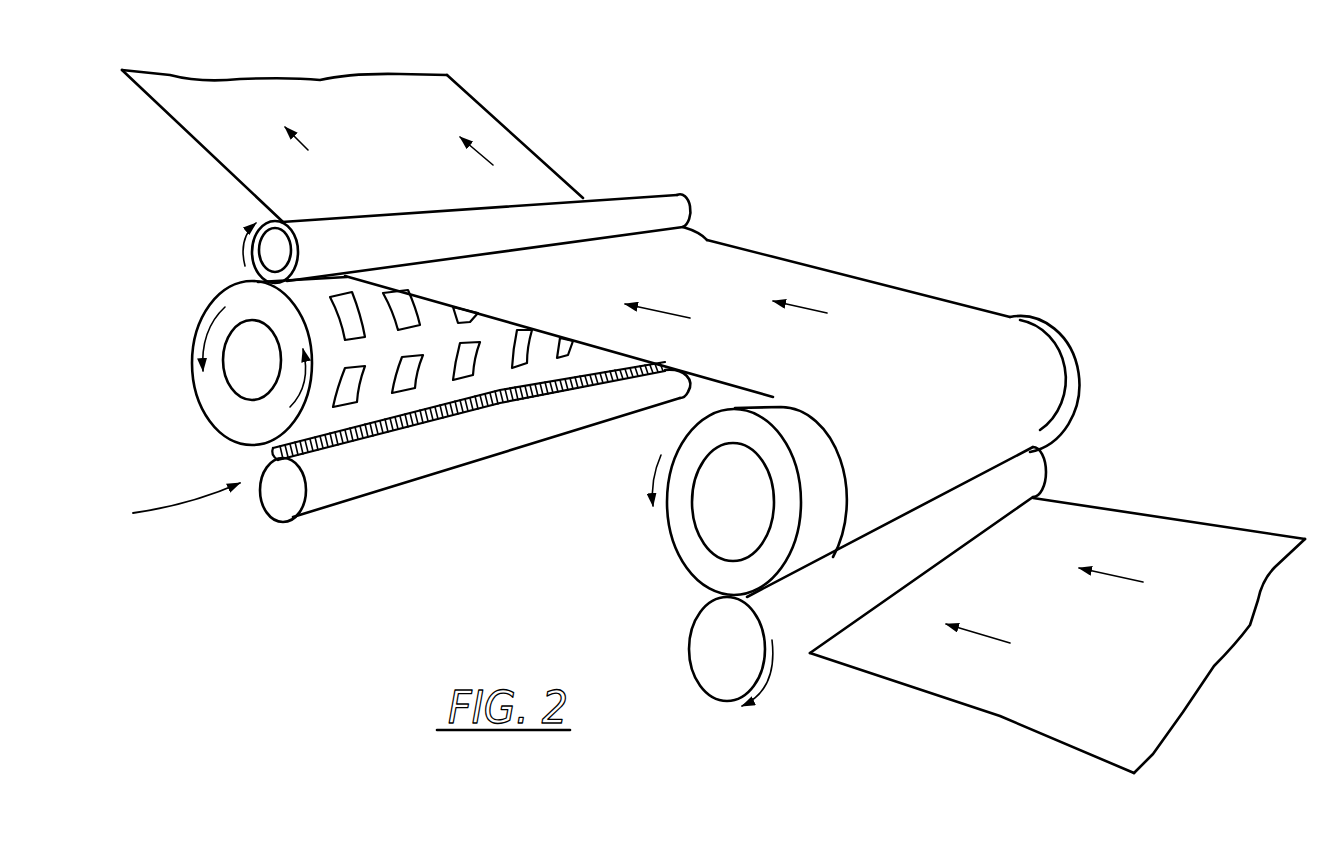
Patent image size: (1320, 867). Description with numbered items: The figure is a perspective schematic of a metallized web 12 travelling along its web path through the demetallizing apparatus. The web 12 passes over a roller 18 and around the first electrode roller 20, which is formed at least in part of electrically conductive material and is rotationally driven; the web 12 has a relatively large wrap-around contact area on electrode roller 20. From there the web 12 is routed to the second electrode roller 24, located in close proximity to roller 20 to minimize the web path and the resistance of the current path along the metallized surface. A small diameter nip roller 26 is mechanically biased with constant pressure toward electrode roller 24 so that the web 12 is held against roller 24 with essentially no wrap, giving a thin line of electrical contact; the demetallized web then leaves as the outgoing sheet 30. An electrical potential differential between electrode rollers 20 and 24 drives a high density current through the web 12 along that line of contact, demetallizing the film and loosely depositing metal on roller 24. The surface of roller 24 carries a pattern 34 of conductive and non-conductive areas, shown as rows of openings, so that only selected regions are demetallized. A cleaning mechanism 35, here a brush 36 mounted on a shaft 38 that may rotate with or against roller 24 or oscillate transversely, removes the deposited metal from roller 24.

The web 12 is at (820, 282).
The roller 18 is at (697, 645).
The electrode roller 20 is at (1069, 365).
The electrode roller 24 is at (193, 390).
The nip roller 26 is at (673, 203).
The treated web 30 is at (207, 148).
The pattern 34 is at (350, 388).
The cleaning mechanism 35 is at (163, 504).
The brush 36 is at (273, 452).
The shaft 38 is at (278, 507).